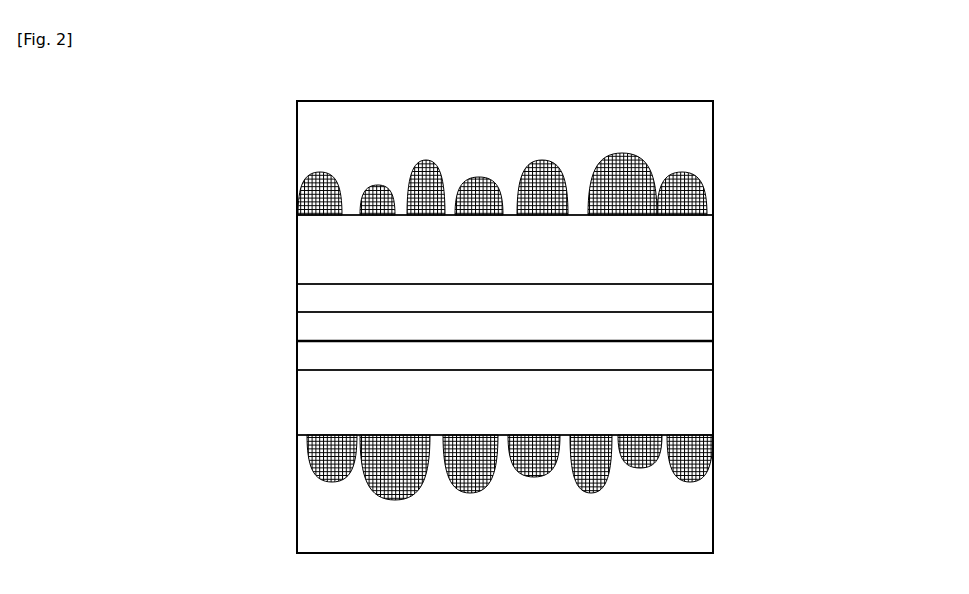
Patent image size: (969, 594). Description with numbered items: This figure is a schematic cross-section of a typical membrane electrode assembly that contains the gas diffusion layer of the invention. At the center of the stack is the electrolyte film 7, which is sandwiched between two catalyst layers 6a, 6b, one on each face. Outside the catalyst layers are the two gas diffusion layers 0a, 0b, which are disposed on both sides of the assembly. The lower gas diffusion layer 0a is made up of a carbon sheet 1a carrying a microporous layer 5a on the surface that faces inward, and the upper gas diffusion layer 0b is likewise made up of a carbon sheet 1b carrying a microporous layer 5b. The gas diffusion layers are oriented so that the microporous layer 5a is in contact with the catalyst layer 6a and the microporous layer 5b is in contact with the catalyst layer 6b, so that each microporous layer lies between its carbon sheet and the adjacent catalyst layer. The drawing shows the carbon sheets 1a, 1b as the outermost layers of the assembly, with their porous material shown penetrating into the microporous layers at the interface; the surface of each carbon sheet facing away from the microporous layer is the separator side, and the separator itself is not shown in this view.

The gas diffusion layer 0b is at (528, 189).
The gas diffusion layer 0a is at (528, 461).
The carbon sheet 1b is at (693, 163).
The microporous layer 5b is at (693, 253).
The catalyst layer 6b is at (693, 295).
The electrolyte film 7 is at (693, 332).
The catalyst layer 6a is at (693, 360).
The microporous layer 5a is at (693, 425).
The carbon sheet 1a is at (693, 533).